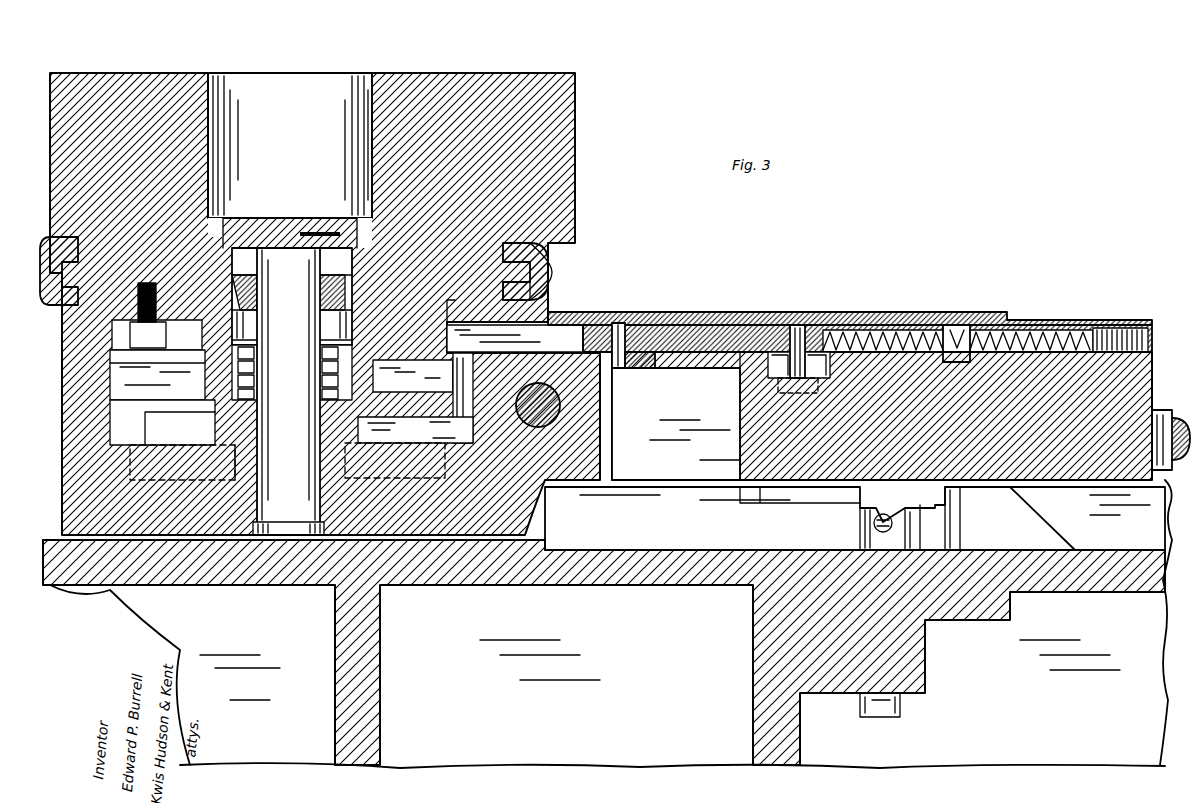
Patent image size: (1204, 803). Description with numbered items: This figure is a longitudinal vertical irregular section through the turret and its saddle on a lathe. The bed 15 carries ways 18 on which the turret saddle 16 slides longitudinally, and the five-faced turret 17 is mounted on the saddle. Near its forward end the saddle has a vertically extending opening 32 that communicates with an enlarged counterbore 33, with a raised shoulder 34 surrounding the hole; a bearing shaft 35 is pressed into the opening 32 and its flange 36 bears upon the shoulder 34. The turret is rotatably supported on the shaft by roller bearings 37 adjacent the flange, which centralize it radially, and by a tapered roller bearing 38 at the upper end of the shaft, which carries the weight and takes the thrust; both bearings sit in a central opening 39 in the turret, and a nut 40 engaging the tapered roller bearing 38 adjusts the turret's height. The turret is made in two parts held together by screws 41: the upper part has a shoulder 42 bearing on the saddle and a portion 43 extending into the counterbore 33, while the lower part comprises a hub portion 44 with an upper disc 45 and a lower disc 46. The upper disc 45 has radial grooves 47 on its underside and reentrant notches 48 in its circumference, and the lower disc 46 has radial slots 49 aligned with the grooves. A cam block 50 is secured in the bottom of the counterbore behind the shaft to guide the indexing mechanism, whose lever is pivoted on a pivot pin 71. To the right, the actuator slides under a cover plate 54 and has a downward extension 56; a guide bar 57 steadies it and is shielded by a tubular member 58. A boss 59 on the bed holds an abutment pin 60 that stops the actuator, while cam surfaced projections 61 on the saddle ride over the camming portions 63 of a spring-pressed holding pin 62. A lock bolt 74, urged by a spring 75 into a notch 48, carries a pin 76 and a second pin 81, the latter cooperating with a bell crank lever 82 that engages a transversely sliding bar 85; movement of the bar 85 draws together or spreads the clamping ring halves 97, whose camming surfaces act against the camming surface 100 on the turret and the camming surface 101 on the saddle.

The bed 15 is at (365, 700).
The turret saddle 16 is at (1058, 318).
The turret 17 is at (575, 180).
The ways 18 is at (1175, 622).
The vertically extending opening 32 is at (290, 542).
The counterbore 33 is at (110, 383).
The shoulder 34 is at (358, 426).
The bearing shaft 35 is at (288, 512).
The flange 36 is at (272, 415).
The roller bearings 37 is at (325, 370).
The tapered roller bearing 38 is at (328, 294).
The opening 39 is at (340, 324).
The nut 40 is at (262, 222).
The screws 41 is at (135, 354).
The shoulder 42 is at (484, 298).
The portion 43 is at (546, 292).
The hub portion 44 is at (370, 388).
The upper disc 45 is at (421, 360).
The lower disc 46 is at (458, 398).
The radially disposed grooves 47 is at (170, 353).
The reentrant notches 48 is at (445, 398).
The radially disposed slots 49 is at (130, 410).
The cam block 50 is at (162, 418).
The cover plate 54 is at (724, 313).
The downward extension 56 is at (773, 500).
The guide bar 57 is at (1180, 418).
The tubular member 58 is at (1160, 410).
The boss 59 is at (1025, 522).
The abutment pin 60 is at (958, 493).
The cam surfaced projections 61 is at (906, 518).
The spring-pressed holding pin 62 is at (864, 534).
The camming portions 63 is at (872, 522).
The pivot pin 71 is at (748, 382).
The lock bolt 74 is at (712, 348).
The spring 75 is at (960, 325).
The pin 76 is at (798, 325).
The second pin 81 is at (617, 370).
The bell crank lever 82 is at (640, 370).
The bar 85 is at (552, 418).
The clamping rings 97 is at (550, 275).
The camming surface 100 is at (540, 263).
The camming surface 101 is at (75, 305).